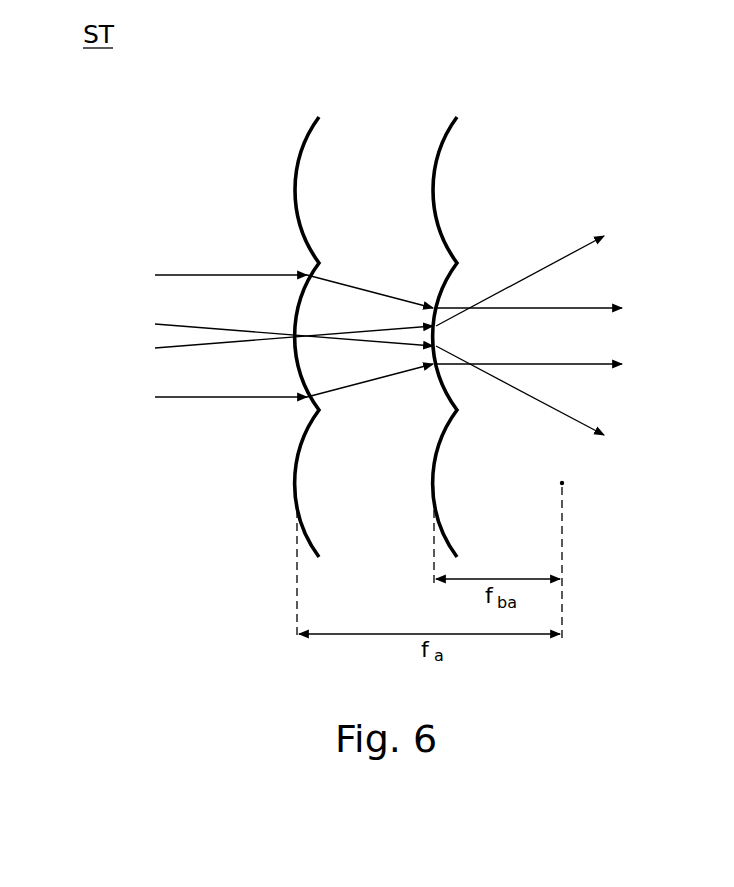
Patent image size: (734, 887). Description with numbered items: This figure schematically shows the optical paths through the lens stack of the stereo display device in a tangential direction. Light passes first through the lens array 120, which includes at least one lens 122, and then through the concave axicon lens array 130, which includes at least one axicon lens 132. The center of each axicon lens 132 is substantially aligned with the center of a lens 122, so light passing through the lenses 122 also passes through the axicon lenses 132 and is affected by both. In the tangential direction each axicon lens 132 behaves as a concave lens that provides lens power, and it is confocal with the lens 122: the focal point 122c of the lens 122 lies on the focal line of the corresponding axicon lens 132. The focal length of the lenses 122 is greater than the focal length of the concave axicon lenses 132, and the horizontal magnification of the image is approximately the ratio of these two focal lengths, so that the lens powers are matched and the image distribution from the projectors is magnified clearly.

The lens array 120 is at (175, 337).
The lens 122 is at (297, 205).
The concave axicon lens array 130 is at (583, 337).
The axicon lens 132 is at (440, 160).
The focal point 122c is at (562, 483).